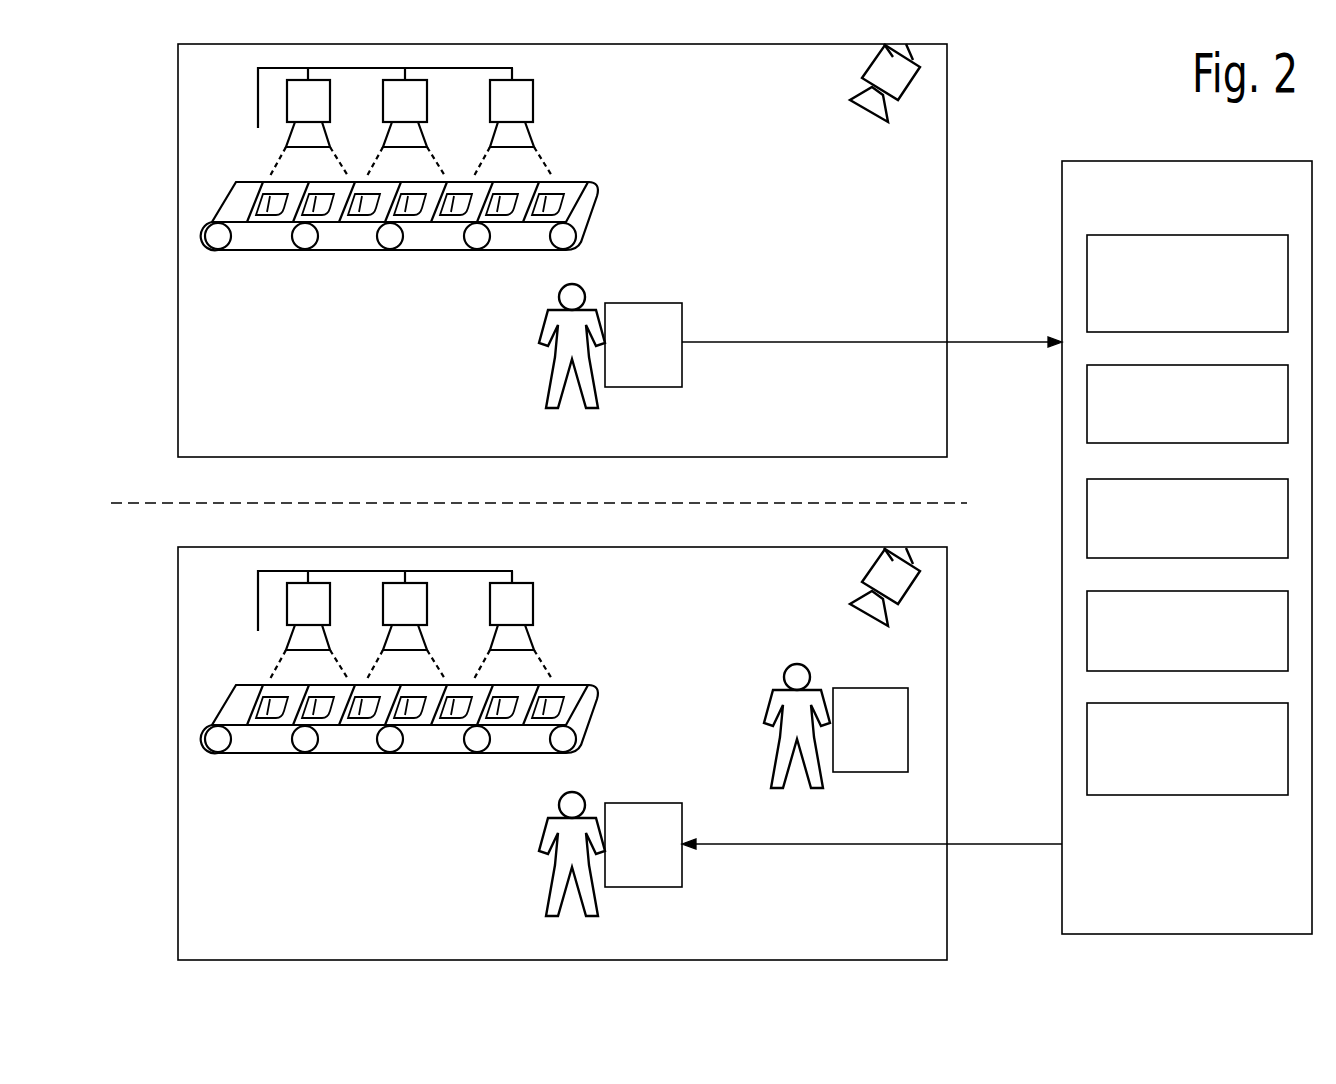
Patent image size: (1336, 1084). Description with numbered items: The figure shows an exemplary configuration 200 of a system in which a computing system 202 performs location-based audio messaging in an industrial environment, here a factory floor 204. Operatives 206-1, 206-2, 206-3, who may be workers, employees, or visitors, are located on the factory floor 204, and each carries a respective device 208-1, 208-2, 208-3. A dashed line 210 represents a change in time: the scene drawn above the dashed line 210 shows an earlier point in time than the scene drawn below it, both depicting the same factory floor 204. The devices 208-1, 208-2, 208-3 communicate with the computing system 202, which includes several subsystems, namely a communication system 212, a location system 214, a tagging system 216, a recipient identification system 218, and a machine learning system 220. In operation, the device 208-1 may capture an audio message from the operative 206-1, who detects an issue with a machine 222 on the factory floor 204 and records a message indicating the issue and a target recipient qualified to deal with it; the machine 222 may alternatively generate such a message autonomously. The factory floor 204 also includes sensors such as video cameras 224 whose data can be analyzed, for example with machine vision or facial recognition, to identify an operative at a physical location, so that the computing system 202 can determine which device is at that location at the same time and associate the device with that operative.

The configuration 200 is at (144, 136).
The computing system 202 is at (1203, 905).
The factory floor 204 is at (947, 257).
The operative 206-1 is at (558, 348).
The operative 206-2 is at (558, 858).
The operative 206-3 is at (783, 729).
The device 208-1 is at (667, 371).
The device 208-2 is at (667, 871).
The device 208-3 is at (894, 756).
The dashed line 210 is at (936, 503).
The communication system 212 is at (1203, 322).
The location system 214 is at (1203, 431).
The tagging system 216 is at (1203, 543).
The recipient identification (ID) system 218 is at (1203, 656).
The machine learning system 220 is at (1203, 787).
The machine 222 is at (533, 111).
The video camera 224 is at (920, 67).